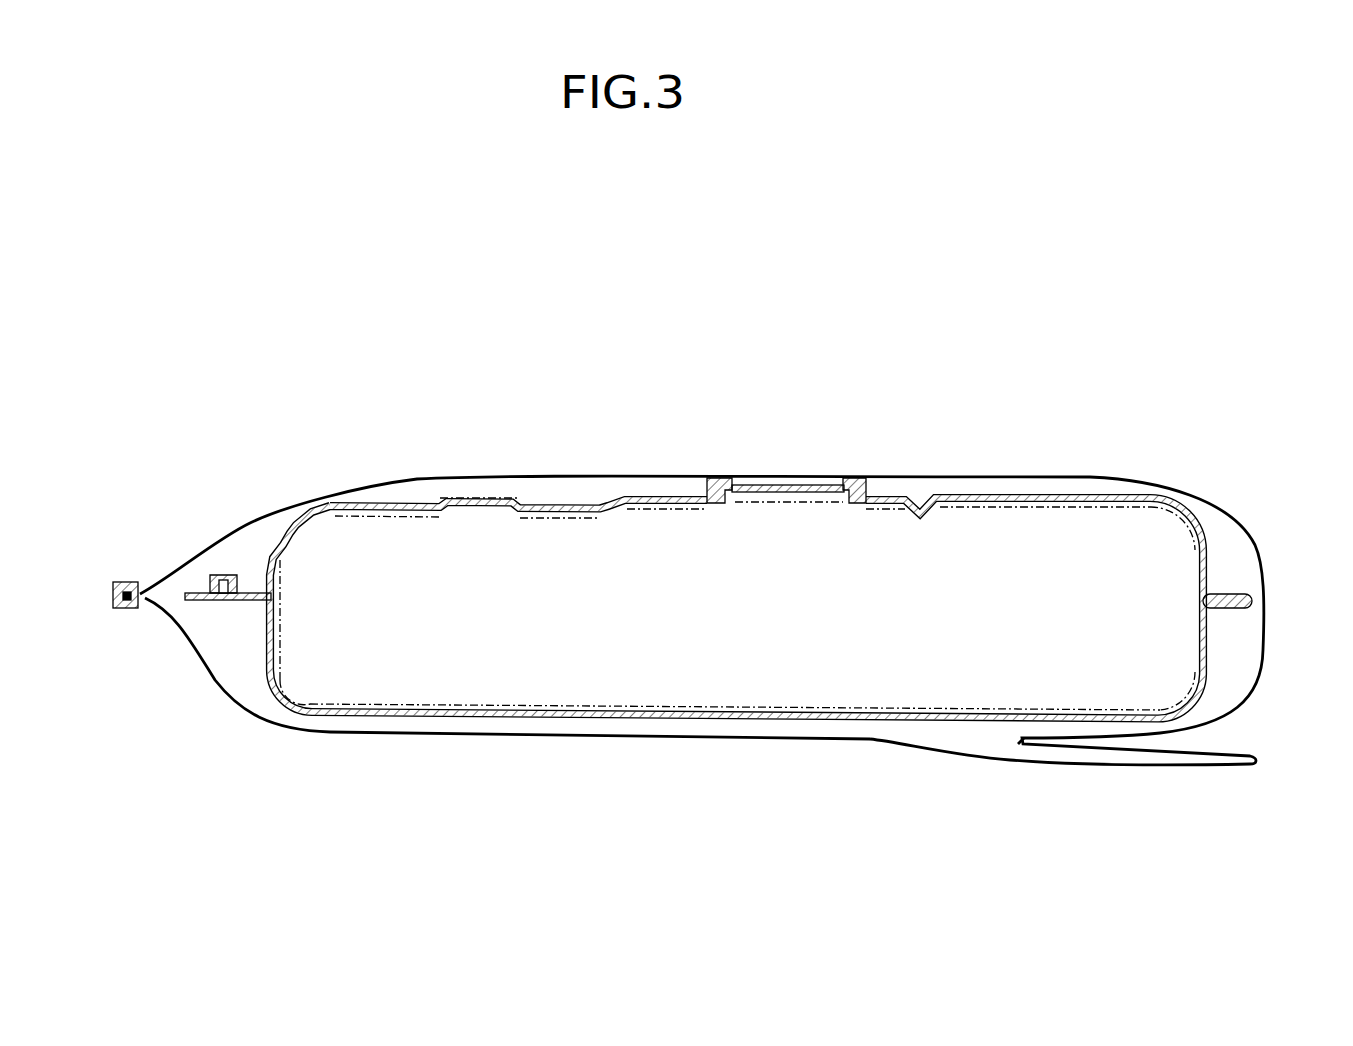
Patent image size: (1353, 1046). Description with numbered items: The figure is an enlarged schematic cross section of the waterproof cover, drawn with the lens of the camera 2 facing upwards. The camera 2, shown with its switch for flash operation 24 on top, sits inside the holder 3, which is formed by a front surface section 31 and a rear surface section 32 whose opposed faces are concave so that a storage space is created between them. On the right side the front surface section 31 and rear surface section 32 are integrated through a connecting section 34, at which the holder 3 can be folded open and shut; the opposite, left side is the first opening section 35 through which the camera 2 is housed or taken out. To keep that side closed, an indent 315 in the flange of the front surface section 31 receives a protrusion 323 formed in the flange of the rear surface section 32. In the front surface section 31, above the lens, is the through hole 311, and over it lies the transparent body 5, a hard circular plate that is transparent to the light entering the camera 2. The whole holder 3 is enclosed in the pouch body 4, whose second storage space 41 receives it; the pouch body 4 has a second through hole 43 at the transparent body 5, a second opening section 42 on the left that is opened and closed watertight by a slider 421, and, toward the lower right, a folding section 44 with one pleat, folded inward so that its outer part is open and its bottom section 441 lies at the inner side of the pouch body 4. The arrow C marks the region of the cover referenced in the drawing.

The camera 2 is at (1020, 505).
The holder 3 is at (590, 496).
The pouch body 4 is at (704, 620).
The transparent body 5 is at (781, 485).
The switch for flash operation 24 is at (492, 505).
The front surface section 31 is at (1077, 495).
The rear surface section 32 is at (918, 723).
The connecting section 34 is at (1260, 590).
The first opening section 35 is at (274, 596).
The second storage space 41 is at (414, 497).
The second opening section 42 is at (157, 612).
The second through hole 43 is at (723, 478).
The folding section 44 is at (1228, 734).
The through hole for in front of the lens 311 is at (746, 497).
The indent 315 is at (225, 573).
The protrusion 323 is at (209, 588).
The slider 421 is at (122, 585).
The bottom section 441 is at (1020, 745).
The center C is at (858, 440).